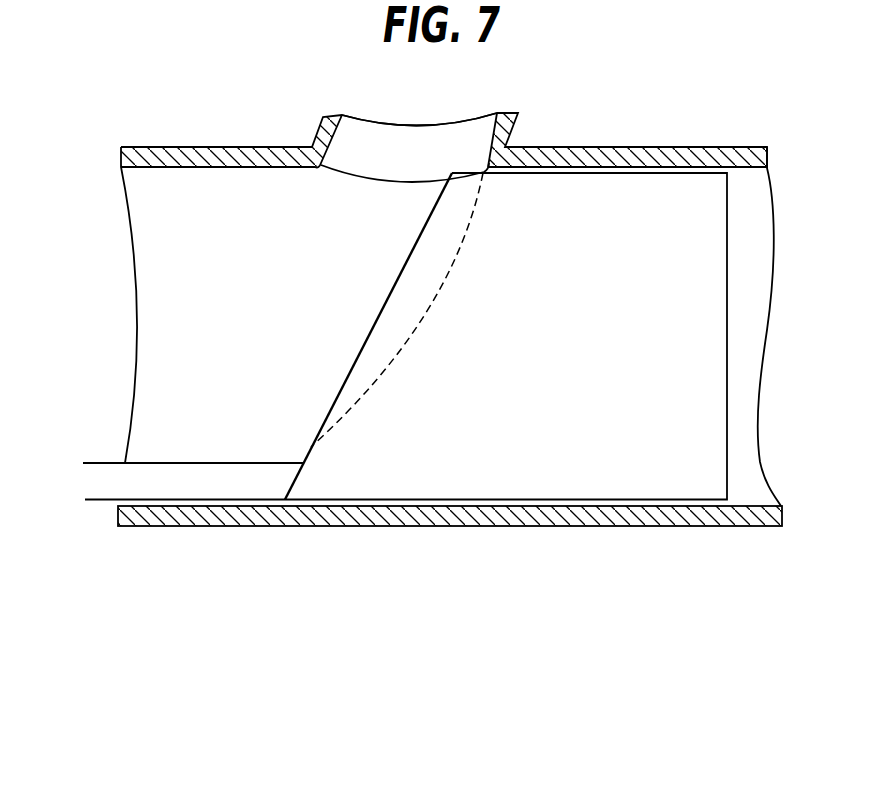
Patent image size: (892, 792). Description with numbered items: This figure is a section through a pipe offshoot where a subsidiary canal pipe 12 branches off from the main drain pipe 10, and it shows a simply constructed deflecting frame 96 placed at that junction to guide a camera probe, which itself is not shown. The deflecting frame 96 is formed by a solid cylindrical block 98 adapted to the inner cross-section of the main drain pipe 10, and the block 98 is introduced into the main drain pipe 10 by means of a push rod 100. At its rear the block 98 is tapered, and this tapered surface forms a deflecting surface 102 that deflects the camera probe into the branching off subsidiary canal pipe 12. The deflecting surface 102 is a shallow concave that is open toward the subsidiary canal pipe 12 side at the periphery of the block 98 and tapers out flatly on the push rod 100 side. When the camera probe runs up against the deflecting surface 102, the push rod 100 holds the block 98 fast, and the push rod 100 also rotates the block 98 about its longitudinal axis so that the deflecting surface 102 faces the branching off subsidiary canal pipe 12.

The main drain pipe 10 is at (318, 528).
The subsidiary canal pipe 12 is at (316, 131).
The deflecting frame 96 is at (644, 120).
The solid cylindrical block 98 is at (545, 477).
The push rod 100 is at (103, 501).
The deflecting surface 102 is at (393, 363).